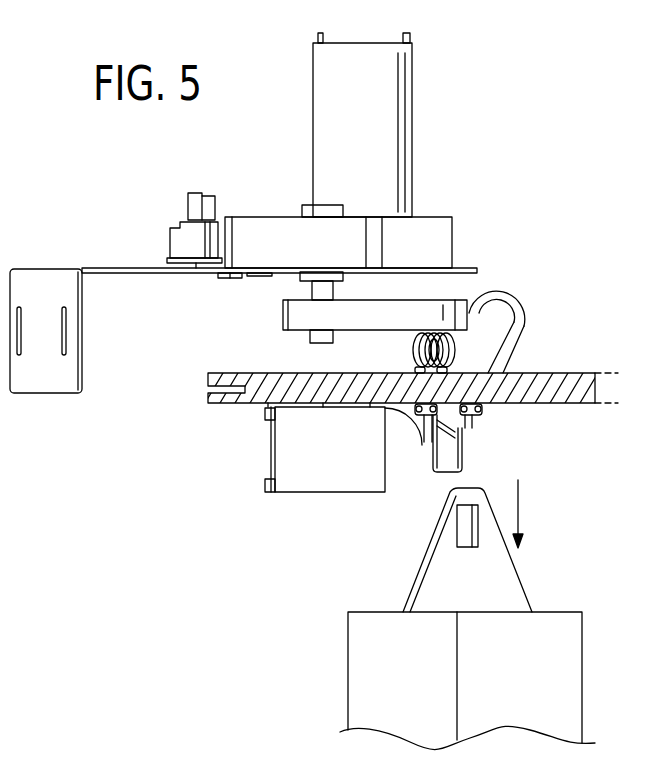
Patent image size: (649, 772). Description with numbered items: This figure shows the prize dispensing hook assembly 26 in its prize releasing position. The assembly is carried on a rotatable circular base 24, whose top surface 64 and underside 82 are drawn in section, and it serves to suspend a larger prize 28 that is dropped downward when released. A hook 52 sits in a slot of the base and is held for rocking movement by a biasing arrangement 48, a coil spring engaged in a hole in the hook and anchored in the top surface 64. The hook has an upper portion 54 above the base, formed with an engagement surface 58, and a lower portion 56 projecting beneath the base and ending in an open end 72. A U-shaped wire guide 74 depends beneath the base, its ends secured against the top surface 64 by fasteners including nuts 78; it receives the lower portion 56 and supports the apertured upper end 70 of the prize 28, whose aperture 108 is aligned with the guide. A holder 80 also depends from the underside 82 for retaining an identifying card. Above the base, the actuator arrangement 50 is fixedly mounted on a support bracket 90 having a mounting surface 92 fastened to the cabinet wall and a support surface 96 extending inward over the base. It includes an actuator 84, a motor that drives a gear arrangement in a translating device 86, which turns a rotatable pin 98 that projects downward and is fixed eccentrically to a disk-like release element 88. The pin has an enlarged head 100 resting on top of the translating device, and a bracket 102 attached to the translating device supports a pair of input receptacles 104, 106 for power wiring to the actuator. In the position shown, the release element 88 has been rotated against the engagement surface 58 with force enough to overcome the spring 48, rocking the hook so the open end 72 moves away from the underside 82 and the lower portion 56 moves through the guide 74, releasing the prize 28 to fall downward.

The rotatable circular base 24 is at (610, 380).
The prize dispensing hook assembly 26 is at (578, 185).
The larger prize 28 is at (568, 685).
The biasing arrangement 48 is at (414, 338).
The actuator arrangement 50 is at (428, 194).
The hook 52 is at (498, 351).
The upper portion 54 is at (513, 326).
The lower portion 56 is at (404, 426).
The engagement surface 58 is at (500, 283).
The top surface 64 is at (579, 372).
The apertured upper end 70 is at (505, 588).
The open end 72 is at (463, 433).
The U-shaped wire guide 74 is at (462, 455).
The nut 78 is at (482, 410).
The holder 80 is at (288, 447).
The underside 82 is at (580, 403).
The actuator 84 is at (328, 101).
The translating device 86 is at (440, 245).
The release element 88 is at (300, 322).
The support bracket 90 is at (53, 255).
The mounting surface 92 is at (52, 383).
The support surface 96 is at (120, 268).
The rotatable pin 98 is at (318, 289).
The enlarged head 100 is at (322, 206).
The bracket 102 is at (196, 274).
The input receptacle 104 is at (183, 243).
The input receptacle 106 is at (210, 199).
The aperture 108 is at (460, 530).